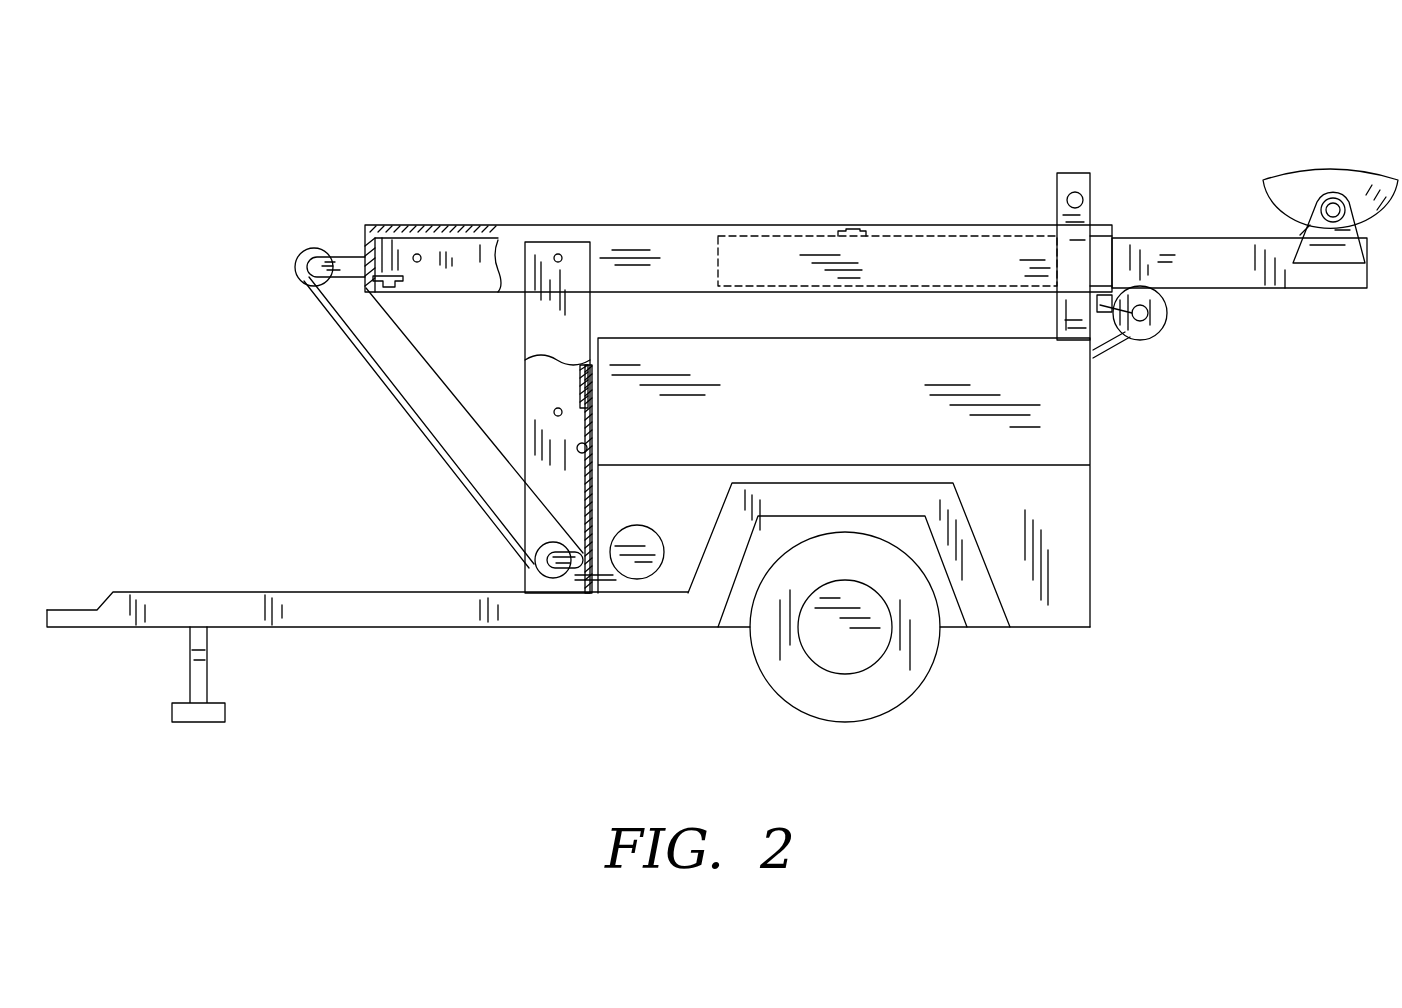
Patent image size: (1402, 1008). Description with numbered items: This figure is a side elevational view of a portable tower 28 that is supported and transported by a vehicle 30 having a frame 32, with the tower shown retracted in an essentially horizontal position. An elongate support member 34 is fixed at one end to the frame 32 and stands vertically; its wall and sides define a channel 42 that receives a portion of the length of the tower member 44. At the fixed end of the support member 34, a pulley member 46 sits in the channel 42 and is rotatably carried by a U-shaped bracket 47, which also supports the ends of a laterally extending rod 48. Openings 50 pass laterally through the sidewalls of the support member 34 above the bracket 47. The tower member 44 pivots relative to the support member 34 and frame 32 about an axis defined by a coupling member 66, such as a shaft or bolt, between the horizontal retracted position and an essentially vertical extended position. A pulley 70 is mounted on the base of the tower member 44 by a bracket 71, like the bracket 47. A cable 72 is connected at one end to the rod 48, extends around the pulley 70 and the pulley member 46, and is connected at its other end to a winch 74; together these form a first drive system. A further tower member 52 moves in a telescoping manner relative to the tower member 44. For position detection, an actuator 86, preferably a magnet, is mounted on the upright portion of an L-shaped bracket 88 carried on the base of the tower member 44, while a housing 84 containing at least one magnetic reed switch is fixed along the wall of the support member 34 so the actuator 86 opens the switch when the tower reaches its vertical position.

The portable tower 28 is at (1000, 117).
The vehicle 30 is at (1140, 413).
The frame 32 is at (415, 615).
The elongate support member 34 is at (540, 330).
The channel 42 is at (588, 447).
The tower member 44 is at (683, 240).
The pulley member 46 is at (563, 578).
The U-shaped bracket 47 is at (548, 560).
The laterally extending rod 48 is at (584, 550).
The openings 50 is at (555, 410).
The tower member 52 is at (857, 287).
The coupling member 66 is at (556, 254).
The pulley 70 is at (305, 262).
The bracket 71 is at (345, 262).
The cable 72 is at (400, 403).
The winch 74 is at (656, 545).
The housing 84 is at (1098, 225).
The actuator 86 is at (390, 288).
The L-shaped bracket 88 is at (383, 233).